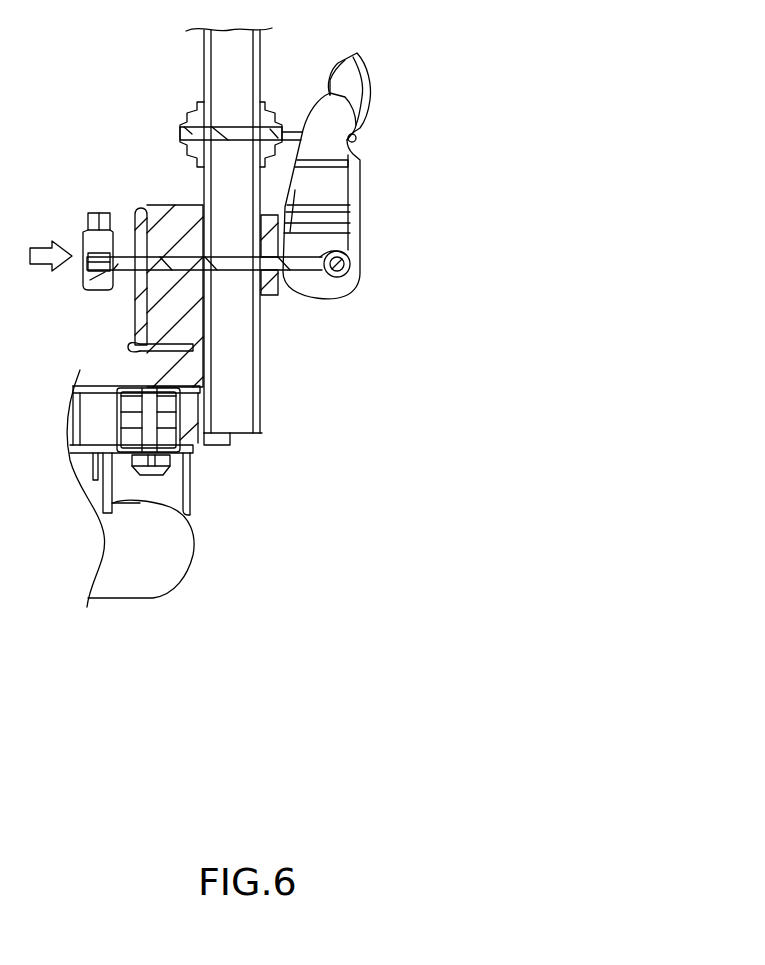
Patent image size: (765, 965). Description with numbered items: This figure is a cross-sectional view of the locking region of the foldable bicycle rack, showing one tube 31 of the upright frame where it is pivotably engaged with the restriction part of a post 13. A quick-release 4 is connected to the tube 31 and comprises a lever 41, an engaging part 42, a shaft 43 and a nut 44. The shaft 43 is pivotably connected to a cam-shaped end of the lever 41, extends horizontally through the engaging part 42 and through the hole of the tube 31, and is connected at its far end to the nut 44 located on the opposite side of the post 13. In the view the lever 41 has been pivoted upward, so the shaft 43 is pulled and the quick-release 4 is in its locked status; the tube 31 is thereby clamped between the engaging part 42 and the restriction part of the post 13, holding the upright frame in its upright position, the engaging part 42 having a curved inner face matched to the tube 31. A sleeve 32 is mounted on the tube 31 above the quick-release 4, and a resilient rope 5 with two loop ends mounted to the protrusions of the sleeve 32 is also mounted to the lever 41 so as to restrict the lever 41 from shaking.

The quick-release 4 is at (370, 260).
The resilient rope 5 is at (357, 137).
The post 13 is at (165, 307).
The tube 31 is at (242, 410).
The sleeve 32 is at (198, 113).
The lever 41 is at (362, 92).
The engaging part 42 is at (273, 290).
The shaft 43 is at (148, 212).
The nut 44 is at (88, 217).